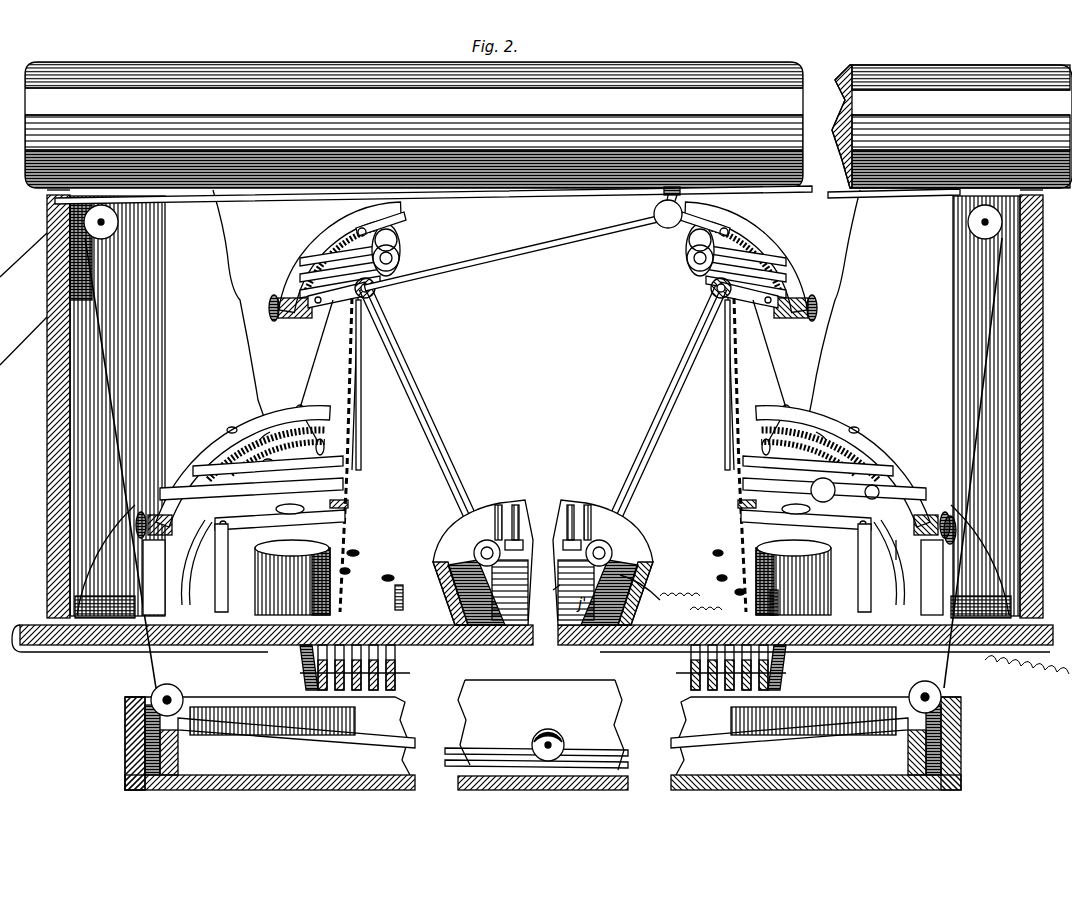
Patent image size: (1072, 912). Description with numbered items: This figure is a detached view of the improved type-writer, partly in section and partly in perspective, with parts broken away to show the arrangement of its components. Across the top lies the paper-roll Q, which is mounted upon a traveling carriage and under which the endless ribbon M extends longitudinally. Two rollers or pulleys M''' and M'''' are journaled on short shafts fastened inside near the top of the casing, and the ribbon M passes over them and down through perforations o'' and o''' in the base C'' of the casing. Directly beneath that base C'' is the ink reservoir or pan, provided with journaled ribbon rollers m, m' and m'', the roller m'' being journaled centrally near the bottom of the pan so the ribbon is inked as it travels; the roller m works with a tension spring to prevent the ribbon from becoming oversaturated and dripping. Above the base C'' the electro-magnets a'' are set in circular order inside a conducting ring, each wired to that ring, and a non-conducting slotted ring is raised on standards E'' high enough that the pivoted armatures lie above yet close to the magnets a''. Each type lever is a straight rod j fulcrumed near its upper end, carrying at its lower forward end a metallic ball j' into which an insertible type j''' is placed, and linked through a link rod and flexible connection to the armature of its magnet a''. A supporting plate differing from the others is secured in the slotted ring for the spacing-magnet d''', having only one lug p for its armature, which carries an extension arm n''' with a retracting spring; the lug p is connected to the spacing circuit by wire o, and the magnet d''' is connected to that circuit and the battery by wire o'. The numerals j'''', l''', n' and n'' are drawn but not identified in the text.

The paper-roll Q is at (548, 125).
The endless ribbon M is at (507, 205).
The roller M''' is at (101, 221).
The roller M'''' is at (985, 222).
The rod j is at (516, 333).
The metallic ball j' is at (665, 228).
The insertible type j''' is at (650, 198).
The rod end j'''' is at (549, 595).
The standards E'' is at (154, 563).
The right bearing block F'''' is at (918, 558).
The spacing-magnet d''' is at (793, 586).
The electro-magnet a'' is at (292, 588).
The lug p is at (897, 541).
The base C'' is at (395, 568).
The link l''' is at (642, 587).
The wire o is at (725, 545).
The wire o' is at (747, 597).
The perforation o'' is at (120, 463).
The perforation o''' is at (1008, 474).
The spring n' is at (680, 582).
The spring n'' is at (700, 599).
The extension or arm n''' is at (858, 442).
The ribbon roller m is at (195, 700).
The ribbon roller m' is at (909, 697).
The ribbon roller m'' is at (548, 726).